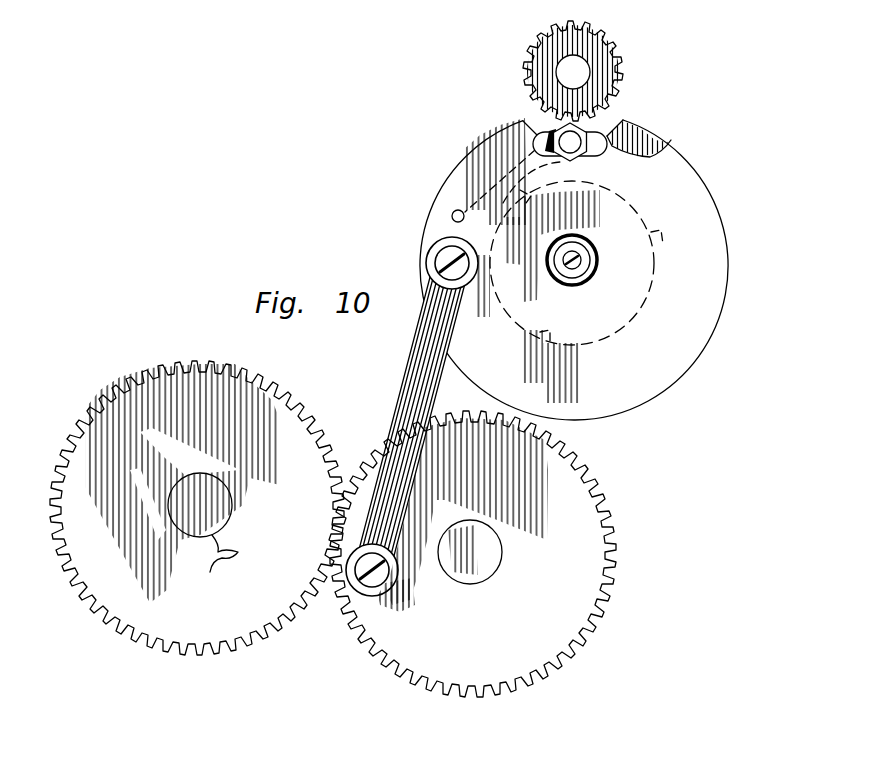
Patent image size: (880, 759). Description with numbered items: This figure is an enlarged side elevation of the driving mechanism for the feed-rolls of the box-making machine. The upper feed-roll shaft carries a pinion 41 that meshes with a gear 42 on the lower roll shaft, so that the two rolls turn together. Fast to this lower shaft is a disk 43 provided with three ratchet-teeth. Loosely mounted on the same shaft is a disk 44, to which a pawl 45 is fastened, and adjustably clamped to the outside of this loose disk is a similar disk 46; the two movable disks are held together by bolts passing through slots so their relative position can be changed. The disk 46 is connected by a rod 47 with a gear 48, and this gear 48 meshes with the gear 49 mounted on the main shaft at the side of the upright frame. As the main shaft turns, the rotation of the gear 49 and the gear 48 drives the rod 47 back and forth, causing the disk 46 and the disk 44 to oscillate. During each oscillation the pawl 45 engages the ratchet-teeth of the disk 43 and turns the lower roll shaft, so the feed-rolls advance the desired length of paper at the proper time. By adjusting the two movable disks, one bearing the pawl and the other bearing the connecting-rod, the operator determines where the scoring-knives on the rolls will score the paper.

The pinion 41 is at (612, 60).
The gear 42 is at (604, 124).
The disk with three ratchet-teeth 43 is at (640, 232).
The disk 44 is at (673, 142).
The pawl 45 is at (520, 152).
The disk 46 is at (574, 269).
The rod 47 is at (410, 378).
The gear 48 is at (473, 554).
The gear 49 is at (197, 508).